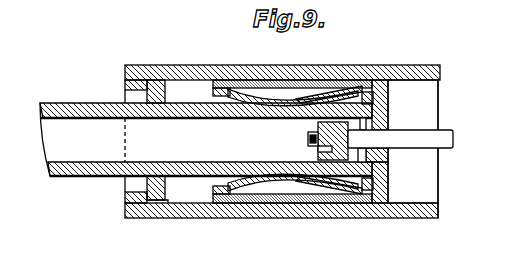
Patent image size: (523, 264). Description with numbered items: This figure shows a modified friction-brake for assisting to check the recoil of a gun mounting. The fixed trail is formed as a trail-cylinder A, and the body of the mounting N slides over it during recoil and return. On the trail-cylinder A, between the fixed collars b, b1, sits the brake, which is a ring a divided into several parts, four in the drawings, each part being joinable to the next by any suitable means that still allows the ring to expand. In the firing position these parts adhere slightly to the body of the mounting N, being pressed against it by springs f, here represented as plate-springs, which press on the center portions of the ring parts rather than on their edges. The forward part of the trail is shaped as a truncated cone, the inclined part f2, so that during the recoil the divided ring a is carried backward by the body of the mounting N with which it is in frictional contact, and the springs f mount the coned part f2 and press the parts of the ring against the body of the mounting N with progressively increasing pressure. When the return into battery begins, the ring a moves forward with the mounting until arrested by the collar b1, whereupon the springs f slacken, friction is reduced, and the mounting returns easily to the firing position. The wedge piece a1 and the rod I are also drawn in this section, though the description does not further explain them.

The body of the mounting N is at (200, 72).
The trail-cylinder A is at (206, 139).
The fixed collar b is at (163, 90).
The fixed collar b1 is at (388, 95).
The divided ring a is at (247, 80).
The wedge piece a1 is at (293, 80).
The plate-spring f is at (316, 106).
The inclined part of the trail f2 is at (298, 141).
The rod I is at (400, 141).